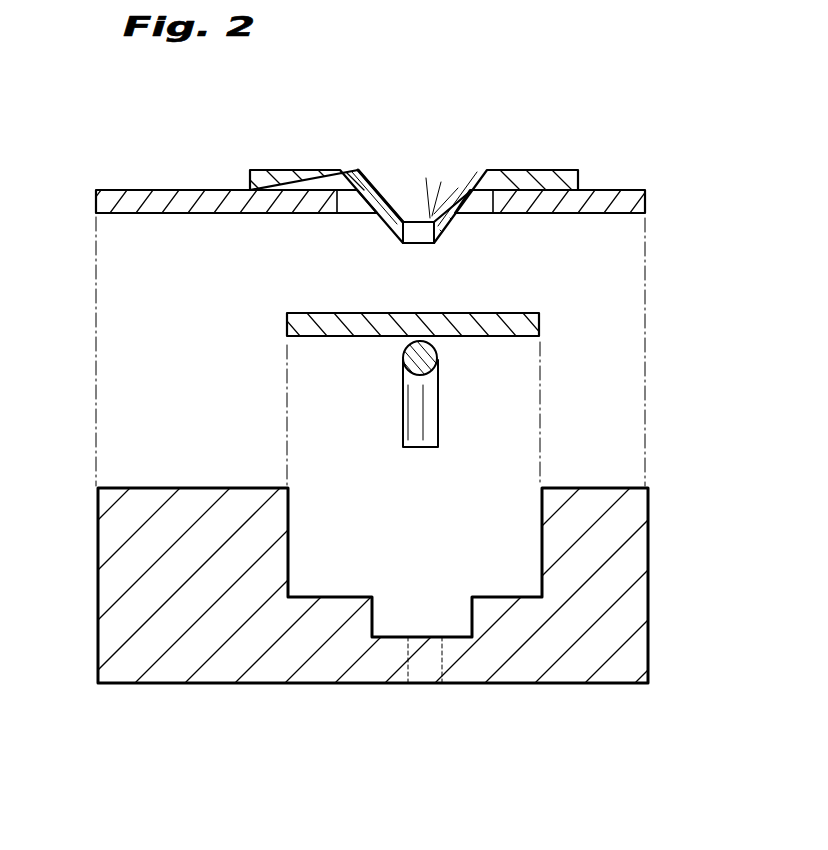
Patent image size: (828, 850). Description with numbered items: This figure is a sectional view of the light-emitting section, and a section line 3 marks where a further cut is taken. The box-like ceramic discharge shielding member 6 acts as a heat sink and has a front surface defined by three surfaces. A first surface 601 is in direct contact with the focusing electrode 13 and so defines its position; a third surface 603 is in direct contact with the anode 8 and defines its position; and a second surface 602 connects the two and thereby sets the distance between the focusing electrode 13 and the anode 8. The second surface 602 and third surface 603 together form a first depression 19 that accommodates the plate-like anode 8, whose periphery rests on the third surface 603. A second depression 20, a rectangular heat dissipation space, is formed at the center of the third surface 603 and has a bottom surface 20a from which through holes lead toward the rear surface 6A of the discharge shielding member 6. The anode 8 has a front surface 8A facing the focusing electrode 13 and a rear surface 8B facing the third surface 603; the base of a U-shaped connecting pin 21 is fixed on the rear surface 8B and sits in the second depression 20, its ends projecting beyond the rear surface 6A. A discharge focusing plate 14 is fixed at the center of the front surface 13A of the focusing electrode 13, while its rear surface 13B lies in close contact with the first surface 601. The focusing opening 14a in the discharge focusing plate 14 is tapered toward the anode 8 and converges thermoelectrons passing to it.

The glass stem 3 is at (420, 160).
The discharge shielding member 6 is at (612, 651).
The rear surface 6A is at (132, 686).
The anode 8 is at (540, 322).
The front surface 8A is at (300, 313).
The rear surface 8B is at (310, 338).
The focusing electrode 13 is at (640, 206).
The front surface 13A is at (147, 190).
The rear surface 13B is at (130, 214).
The discharge focusing plate 14 is at (530, 178).
The focusing opening 14a is at (430, 236).
The first depression 19 is at (450, 532).
The second depression 20 is at (400, 612).
The bottom surface 20a is at (454, 638).
The connecting pin 21 is at (435, 405).
The first surface 601 is at (162, 486).
The second surface 602 is at (290, 537).
The third surface 603 is at (322, 598).